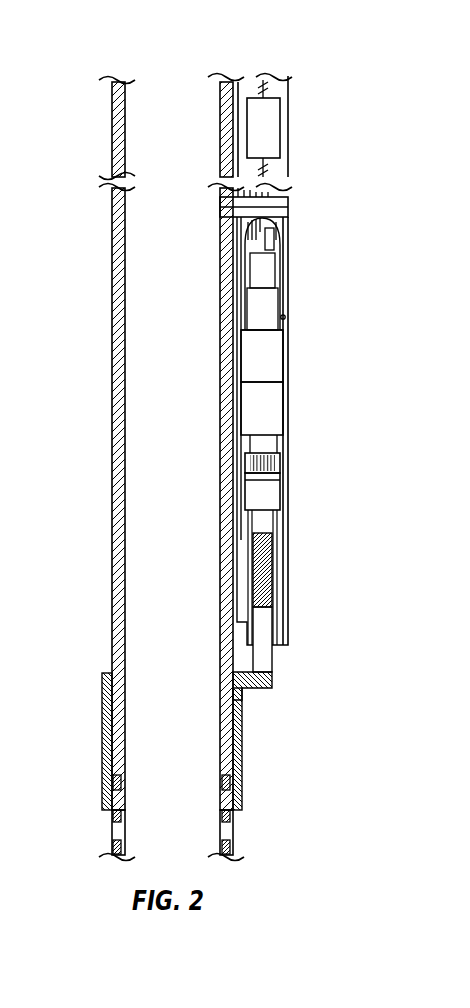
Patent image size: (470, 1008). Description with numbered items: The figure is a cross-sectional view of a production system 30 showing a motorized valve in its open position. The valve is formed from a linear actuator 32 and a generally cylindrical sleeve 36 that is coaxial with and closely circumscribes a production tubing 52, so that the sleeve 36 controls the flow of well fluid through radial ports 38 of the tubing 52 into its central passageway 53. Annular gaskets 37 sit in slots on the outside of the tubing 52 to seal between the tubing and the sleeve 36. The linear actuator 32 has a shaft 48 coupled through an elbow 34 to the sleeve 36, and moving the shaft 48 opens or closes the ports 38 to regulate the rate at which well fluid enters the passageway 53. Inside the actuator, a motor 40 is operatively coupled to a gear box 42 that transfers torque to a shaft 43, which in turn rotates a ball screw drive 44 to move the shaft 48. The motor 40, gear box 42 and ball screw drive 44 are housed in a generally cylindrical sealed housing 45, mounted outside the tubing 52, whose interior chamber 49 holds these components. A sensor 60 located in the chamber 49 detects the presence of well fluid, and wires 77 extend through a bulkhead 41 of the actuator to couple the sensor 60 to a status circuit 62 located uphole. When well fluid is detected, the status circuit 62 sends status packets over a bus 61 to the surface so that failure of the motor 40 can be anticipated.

The production system 30 is at (375, 98).
The linear actuator 32 is at (292, 300).
The elbow 34 is at (258, 688).
The sleeve 36 is at (238, 745).
The annular gaskets 37 is at (222, 783).
The radial ports 38 is at (222, 815).
The motor 40 is at (272, 353).
The bulkhead 41 is at (288, 210).
The gear box 42 is at (272, 405).
The shaft 43 is at (266, 456).
The ball screw drive 44 is at (268, 492).
The sealed housing 45 is at (289, 580).
The shaft 48 is at (262, 630).
The interior chamber 49 is at (286, 318).
The production tubing 52 is at (113, 533).
The central passageway 53 is at (182, 490).
The sensor 60 is at (276, 241).
The bus 61 is at (263, 83).
The status circuit 62 is at (281, 122).
The wires 77 is at (266, 172).